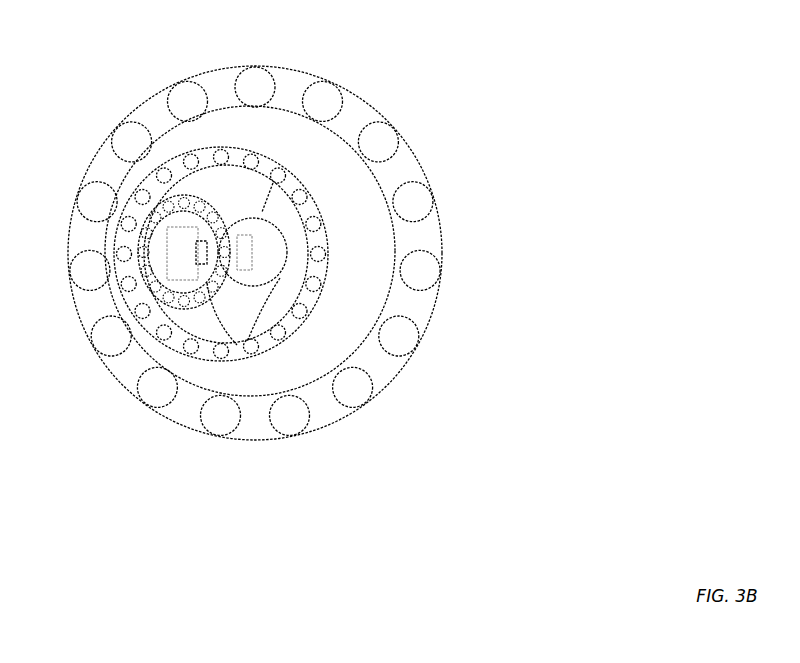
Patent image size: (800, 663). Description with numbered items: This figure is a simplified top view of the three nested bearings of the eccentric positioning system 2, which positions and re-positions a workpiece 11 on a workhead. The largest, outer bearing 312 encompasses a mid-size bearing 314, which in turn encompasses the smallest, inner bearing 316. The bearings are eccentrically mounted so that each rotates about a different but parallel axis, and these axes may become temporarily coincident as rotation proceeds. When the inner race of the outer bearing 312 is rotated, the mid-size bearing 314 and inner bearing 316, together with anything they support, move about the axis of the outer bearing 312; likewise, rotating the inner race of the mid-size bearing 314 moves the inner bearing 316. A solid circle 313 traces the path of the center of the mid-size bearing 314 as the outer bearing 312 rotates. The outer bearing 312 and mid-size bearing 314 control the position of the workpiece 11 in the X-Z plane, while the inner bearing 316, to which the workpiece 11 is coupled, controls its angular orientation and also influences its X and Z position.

The eccentric positioning system 2 is at (430, 80).
The workpiece 11 is at (207, 252).
The outer bearing 312 is at (364, 99).
The solid circle 313 is at (283, 158).
The mid-size bearing 314 is at (320, 208).
The inner bearing 316 is at (226, 276).